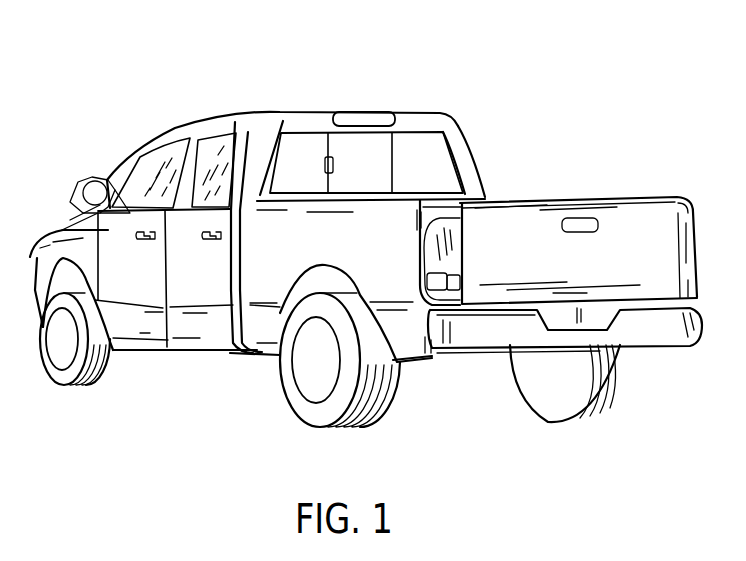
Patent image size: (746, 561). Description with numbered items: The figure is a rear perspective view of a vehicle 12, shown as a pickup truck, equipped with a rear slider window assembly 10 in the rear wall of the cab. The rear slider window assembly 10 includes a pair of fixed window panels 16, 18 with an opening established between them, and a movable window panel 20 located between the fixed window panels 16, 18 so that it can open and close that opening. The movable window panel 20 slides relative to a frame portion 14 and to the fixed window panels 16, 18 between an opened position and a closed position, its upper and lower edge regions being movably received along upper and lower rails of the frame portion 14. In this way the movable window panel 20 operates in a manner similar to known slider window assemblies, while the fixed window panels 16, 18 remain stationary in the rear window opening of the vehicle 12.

The rear slider window assembly 10 is at (426, 154).
The vehicle 12 is at (212, 71).
The frame portion 14 is at (293, 197).
The fixed window panel 16 is at (311, 141).
The fixed window panel 18 is at (447, 171).
The movable window panel 20 is at (373, 141).